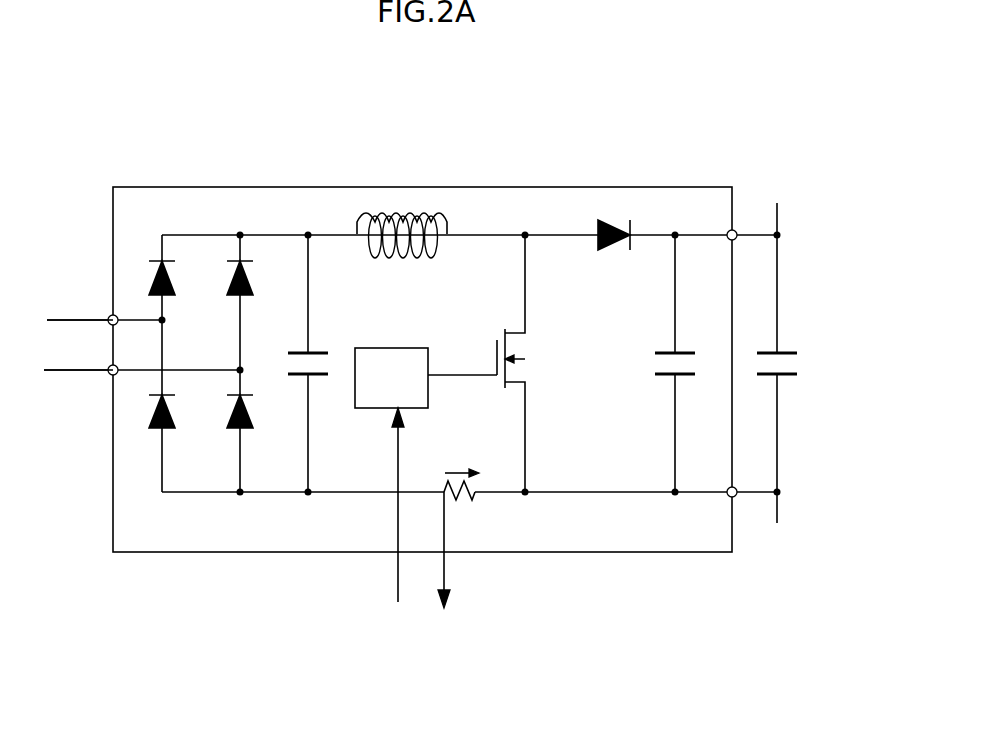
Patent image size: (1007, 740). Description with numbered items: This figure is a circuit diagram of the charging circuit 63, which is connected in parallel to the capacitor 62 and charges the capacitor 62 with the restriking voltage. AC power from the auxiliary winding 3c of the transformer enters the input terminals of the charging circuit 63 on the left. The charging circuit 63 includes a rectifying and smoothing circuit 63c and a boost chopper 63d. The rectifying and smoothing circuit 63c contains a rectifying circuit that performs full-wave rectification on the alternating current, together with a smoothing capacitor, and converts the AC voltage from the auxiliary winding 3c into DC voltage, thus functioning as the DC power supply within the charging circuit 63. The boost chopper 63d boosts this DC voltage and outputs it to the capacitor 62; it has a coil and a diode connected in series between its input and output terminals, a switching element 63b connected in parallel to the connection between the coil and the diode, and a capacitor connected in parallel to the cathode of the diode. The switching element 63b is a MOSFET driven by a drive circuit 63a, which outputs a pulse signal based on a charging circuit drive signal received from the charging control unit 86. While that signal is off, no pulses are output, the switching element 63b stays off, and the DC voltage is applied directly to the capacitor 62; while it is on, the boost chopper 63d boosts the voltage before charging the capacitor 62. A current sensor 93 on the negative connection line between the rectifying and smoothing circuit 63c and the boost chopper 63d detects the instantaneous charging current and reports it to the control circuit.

The charging circuit 63 is at (715, 187).
The drive circuit 63a is at (428, 348).
The switching element 63b is at (542, 357).
The rectifying and smoothing circuit 63c is at (268, 213).
The boost chopper 63d is at (517, 214).
The capacitor 62 is at (807, 365).
The current sensor 93 is at (454, 463).
The charging control unit 86 is at (420, 523).
The auxiliary winding 3c is at (63, 345).